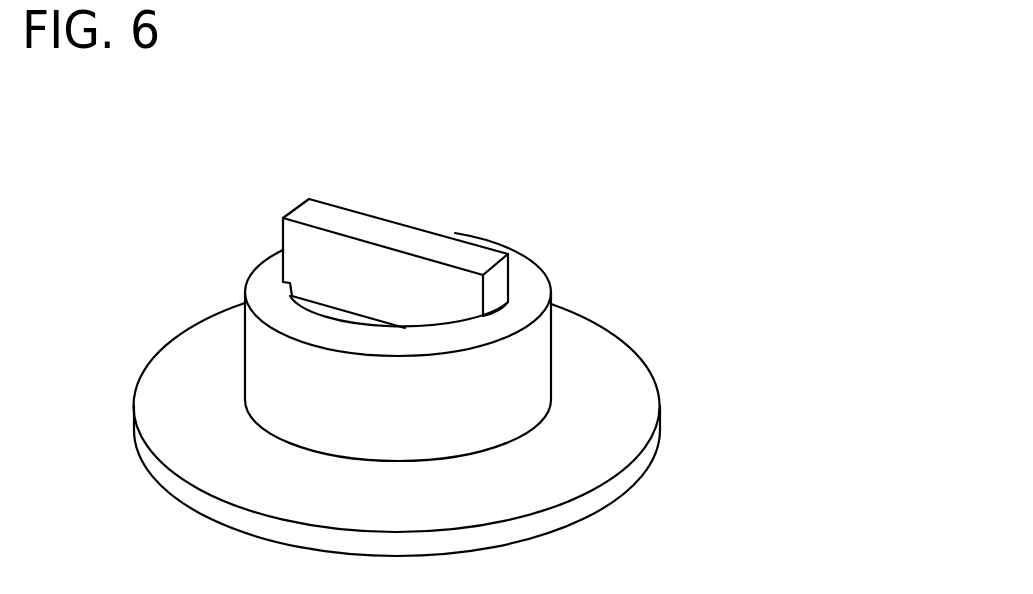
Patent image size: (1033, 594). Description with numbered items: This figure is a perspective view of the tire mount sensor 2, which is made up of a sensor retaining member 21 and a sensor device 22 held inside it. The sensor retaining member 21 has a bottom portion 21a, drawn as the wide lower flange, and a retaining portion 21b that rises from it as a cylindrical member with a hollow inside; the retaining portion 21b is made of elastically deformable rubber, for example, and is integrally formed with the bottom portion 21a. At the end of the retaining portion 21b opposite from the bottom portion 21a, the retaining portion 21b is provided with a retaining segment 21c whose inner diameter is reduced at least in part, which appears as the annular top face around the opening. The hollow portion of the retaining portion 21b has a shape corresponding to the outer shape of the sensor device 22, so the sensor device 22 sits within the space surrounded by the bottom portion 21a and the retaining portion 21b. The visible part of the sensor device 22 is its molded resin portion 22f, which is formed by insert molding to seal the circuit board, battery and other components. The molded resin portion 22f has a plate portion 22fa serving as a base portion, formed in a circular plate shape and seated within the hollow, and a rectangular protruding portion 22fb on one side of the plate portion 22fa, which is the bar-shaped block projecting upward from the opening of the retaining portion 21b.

The tire mount sensor 2 is at (272, 247).
The sensor retaining member 21 is at (782, 308).
The bottom portion 21a is at (654, 372).
The retaining portion 21b is at (525, 345).
The retaining segment 21c is at (517, 285).
The sensor device 22 is at (316, 197).
The molded resin portion 22f is at (537, 131).
The plate portion 22fa is at (347, 316).
The protruding portion 22fb is at (444, 247).